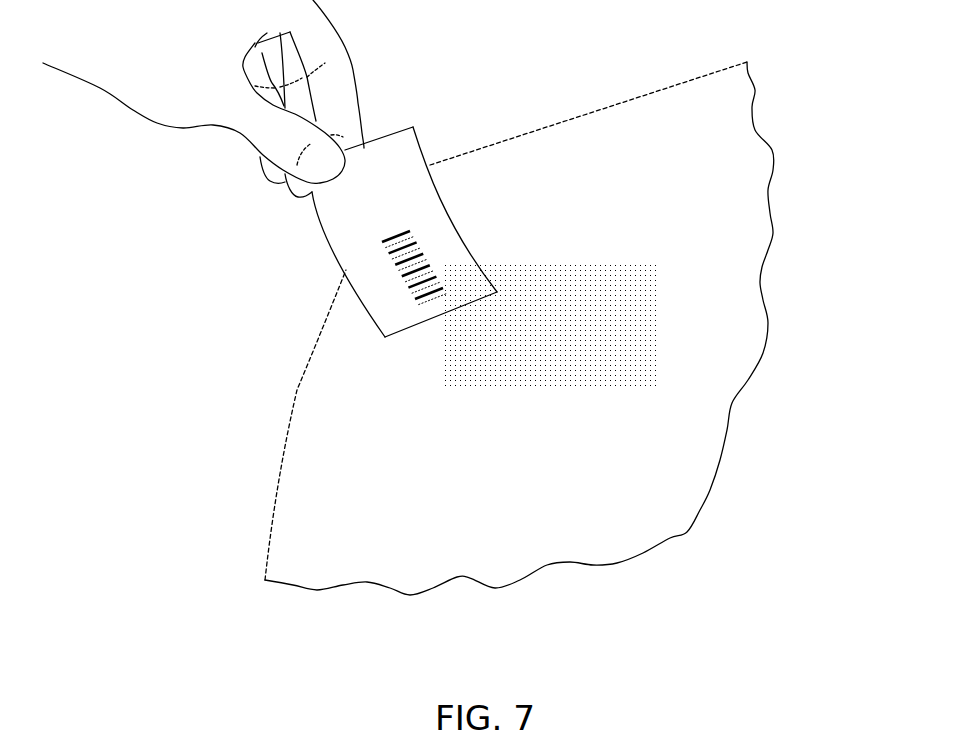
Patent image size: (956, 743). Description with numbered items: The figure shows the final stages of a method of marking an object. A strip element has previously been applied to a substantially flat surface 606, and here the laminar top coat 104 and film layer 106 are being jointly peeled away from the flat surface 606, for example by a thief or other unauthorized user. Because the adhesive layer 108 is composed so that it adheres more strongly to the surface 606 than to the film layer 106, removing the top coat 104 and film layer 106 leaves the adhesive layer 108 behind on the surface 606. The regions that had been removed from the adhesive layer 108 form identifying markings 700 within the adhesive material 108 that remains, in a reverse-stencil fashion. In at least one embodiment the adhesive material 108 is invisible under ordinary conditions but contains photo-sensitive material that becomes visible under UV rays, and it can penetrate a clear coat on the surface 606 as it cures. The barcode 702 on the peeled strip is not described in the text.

The laminar top coat 104 is at (372, 193).
The film layer 106 is at (372, 193).
The adhesive layer 108 is at (653, 378).
The substantially flat surface 606 is at (663, 332).
The identifying markings 700 is at (462, 337).
The barcode 702 is at (388, 259).